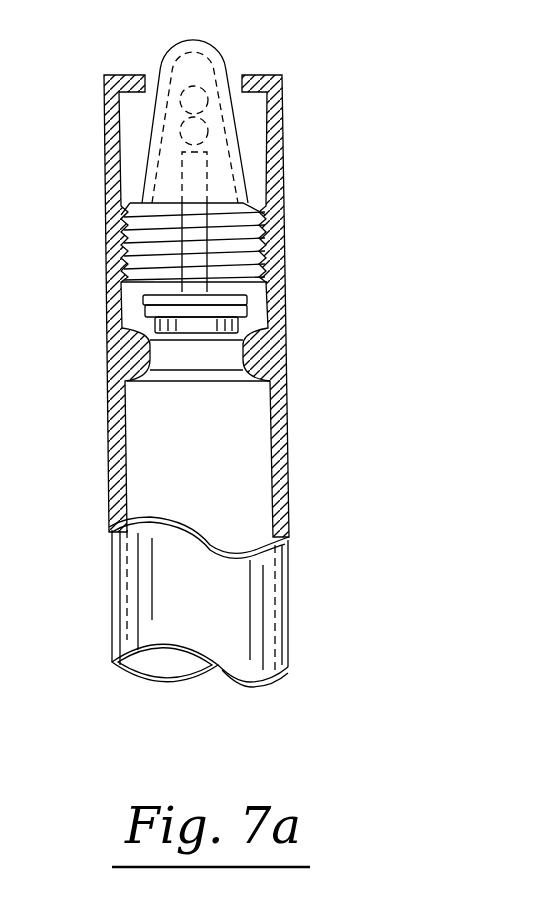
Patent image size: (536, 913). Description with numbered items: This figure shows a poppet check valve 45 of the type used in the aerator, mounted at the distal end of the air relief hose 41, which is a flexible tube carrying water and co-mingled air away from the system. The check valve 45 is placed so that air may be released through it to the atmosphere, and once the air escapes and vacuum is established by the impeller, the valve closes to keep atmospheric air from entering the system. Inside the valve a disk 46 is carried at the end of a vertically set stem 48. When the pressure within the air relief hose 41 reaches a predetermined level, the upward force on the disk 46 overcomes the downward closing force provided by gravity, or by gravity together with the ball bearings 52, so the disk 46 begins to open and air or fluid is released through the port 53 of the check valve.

The air relief hose 41 is at (142, 593).
The poppet check valve 45 is at (302, 443).
The disk 46 is at (240, 310).
The stem 48 is at (207, 173).
The ball bearings 52 is at (208, 74).
The port 53 is at (146, 198).